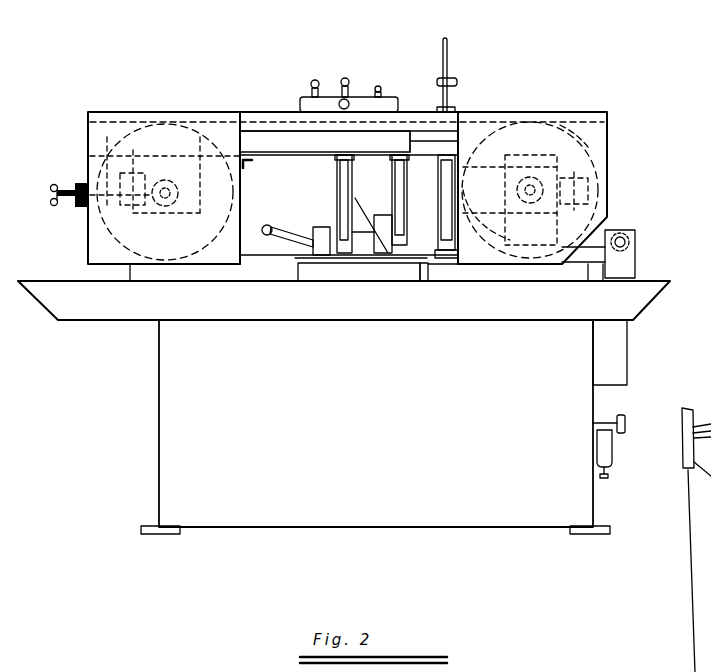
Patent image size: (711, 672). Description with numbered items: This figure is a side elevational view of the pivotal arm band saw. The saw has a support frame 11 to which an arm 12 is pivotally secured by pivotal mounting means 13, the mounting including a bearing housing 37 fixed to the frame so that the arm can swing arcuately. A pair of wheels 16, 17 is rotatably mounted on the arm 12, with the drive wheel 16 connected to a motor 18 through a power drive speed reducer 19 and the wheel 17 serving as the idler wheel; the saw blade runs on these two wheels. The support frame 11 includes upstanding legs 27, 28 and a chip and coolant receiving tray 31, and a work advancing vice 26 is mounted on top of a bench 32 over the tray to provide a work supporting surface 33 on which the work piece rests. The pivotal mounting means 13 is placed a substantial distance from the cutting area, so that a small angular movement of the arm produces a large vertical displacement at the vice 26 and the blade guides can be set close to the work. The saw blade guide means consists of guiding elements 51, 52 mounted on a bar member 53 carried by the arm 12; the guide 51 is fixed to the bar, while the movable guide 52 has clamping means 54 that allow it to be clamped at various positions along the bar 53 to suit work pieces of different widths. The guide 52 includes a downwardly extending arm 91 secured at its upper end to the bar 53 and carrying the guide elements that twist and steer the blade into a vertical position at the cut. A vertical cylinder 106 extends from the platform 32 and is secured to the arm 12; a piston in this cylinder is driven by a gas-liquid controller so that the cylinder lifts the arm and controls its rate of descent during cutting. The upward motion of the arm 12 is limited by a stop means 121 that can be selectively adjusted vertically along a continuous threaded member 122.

The support 11 is at (112, 406).
The arm 12 is at (634, 116).
The pivotal mounting means 13 is at (636, 264).
The wheel 16 is at (576, 136).
The wheel 17 is at (140, 128).
The motor 18 is at (600, 162).
The power drive speed reducer 19 is at (558, 224).
The work advancing vice 26 is at (368, 250).
The upstanding leg 27 is at (598, 498).
The upstanding leg 28 is at (159, 466).
The chip and coolant receiving tray 31 is at (655, 295).
The bench 32 is at (452, 272).
The work supporting surface 33 is at (410, 258).
The bearing housing 37 is at (632, 243).
The saw blade guide member 51 is at (405, 212).
The saw blade guide member 52 is at (337, 180).
The bar member 53 is at (370, 150).
The clamping means 54 is at (350, 127).
The downwardly extending arm 91 is at (340, 212).
The vertical cylinder 106 is at (427, 281).
The stop means 121 is at (460, 83).
The continuous threaded member 122 is at (449, 40).